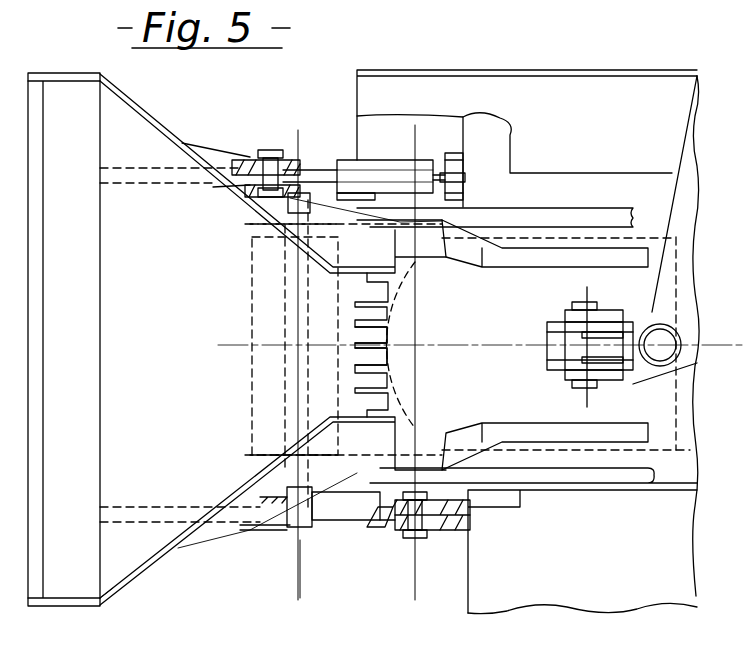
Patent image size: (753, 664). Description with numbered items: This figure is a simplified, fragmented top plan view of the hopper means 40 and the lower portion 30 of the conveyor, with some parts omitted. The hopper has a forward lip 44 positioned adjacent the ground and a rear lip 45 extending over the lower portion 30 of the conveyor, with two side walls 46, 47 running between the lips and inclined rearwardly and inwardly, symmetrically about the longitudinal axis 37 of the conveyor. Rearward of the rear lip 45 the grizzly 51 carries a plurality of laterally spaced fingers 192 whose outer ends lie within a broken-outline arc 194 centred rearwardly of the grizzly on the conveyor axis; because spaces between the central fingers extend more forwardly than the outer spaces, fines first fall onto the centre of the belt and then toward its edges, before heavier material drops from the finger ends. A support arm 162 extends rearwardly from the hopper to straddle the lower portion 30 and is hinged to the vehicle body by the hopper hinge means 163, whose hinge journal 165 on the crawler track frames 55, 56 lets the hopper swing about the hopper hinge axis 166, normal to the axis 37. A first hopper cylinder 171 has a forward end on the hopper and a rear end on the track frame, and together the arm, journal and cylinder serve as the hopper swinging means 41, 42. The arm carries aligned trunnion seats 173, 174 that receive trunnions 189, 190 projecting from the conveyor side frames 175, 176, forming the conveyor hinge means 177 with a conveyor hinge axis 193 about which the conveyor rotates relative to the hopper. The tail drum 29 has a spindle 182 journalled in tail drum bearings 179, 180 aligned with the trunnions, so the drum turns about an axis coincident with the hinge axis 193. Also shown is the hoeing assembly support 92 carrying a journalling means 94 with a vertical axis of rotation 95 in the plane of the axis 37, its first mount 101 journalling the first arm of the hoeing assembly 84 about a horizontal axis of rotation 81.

The tail drum 29 is at (250, 385).
The lower portion of the conveyor 30 is at (353, 528).
The longitudinal axis of the conveyor 37 is at (532, 346).
The hopper means 40 is at (127, 561).
The hopper swinging means 41 is at (225, 113).
The hopper swinging means 42 is at (255, 566).
The forward lip 44 is at (30, 378).
The rear lip 45 is at (420, 345).
The grizzly 51 is at (387, 332).
The side wall 46 is at (147, 115).
The side wall 47 is at (160, 556).
The crawler track frame 55 is at (463, 120).
The crawler track frame 56 is at (497, 603).
The horizontal axis of rotation 81 is at (587, 390).
The hoeing assembly 84 is at (568, 328).
The hoeing assembly support 92 is at (688, 135).
The journalling means 94 is at (655, 318).
The vertical axis of rotation 95 is at (660, 376).
The first mount 101 is at (606, 378).
The support arm 162 is at (305, 520).
The hopper hinge means 163 is at (407, 552).
The hinge journal 165 is at (424, 538).
The hopper hinge axis 166 is at (414, 386).
The first hopper cylinder 171 is at (370, 166).
The trunnion seat 173 is at (306, 200).
The trunnion seat 174 is at (323, 490).
The side frame 175 is at (523, 215).
The side frame 176 is at (556, 472).
The conveyor hinge means 177 is at (311, 143).
The tail drum bearing 179 is at (250, 230).
The tail drum bearing 180 is at (252, 462).
The spindle 182 is at (252, 268).
The trunnion 189 is at (326, 196).
The trunnion 190 is at (288, 532).
The fingers 192 is at (395, 343).
The conveyor hinge axis 193 is at (300, 595).
The arc 194 is at (392, 380).